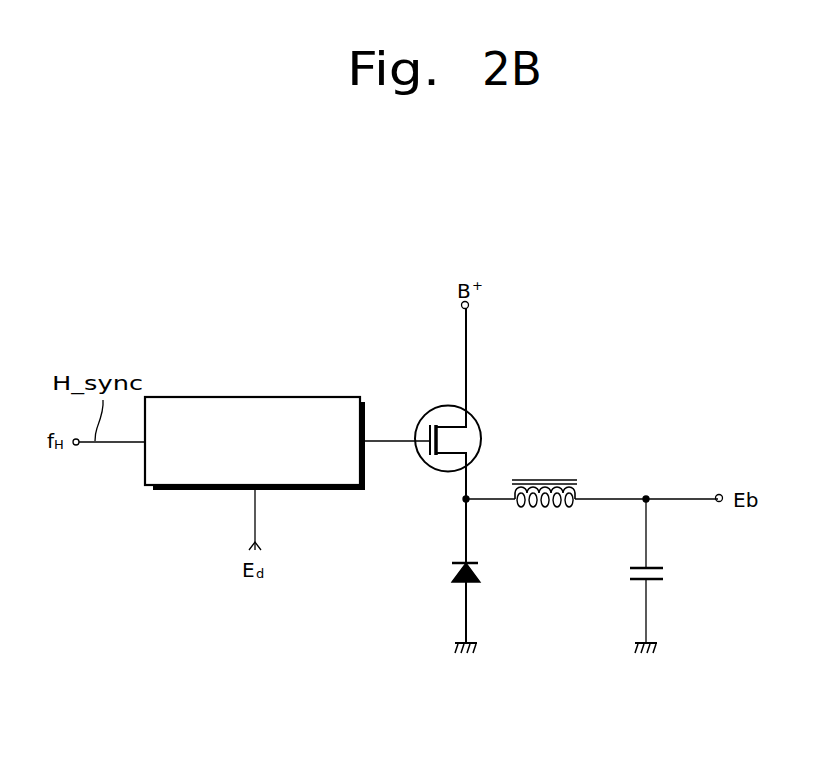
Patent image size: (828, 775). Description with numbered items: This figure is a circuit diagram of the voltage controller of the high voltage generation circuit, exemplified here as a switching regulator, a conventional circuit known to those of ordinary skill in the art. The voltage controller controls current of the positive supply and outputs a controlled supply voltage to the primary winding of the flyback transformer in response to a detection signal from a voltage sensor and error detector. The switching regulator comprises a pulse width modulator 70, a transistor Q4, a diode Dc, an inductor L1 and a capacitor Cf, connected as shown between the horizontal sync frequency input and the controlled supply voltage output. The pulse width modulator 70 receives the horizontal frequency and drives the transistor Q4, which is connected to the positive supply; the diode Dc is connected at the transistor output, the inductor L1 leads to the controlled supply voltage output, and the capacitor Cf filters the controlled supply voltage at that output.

The pulse width modulator 70 is at (313, 396).
The transistor Q4 is at (461, 404).
The inductor L1 is at (544, 509).
The diode Dc is at (447, 576).
The capacitor Cf is at (662, 576).